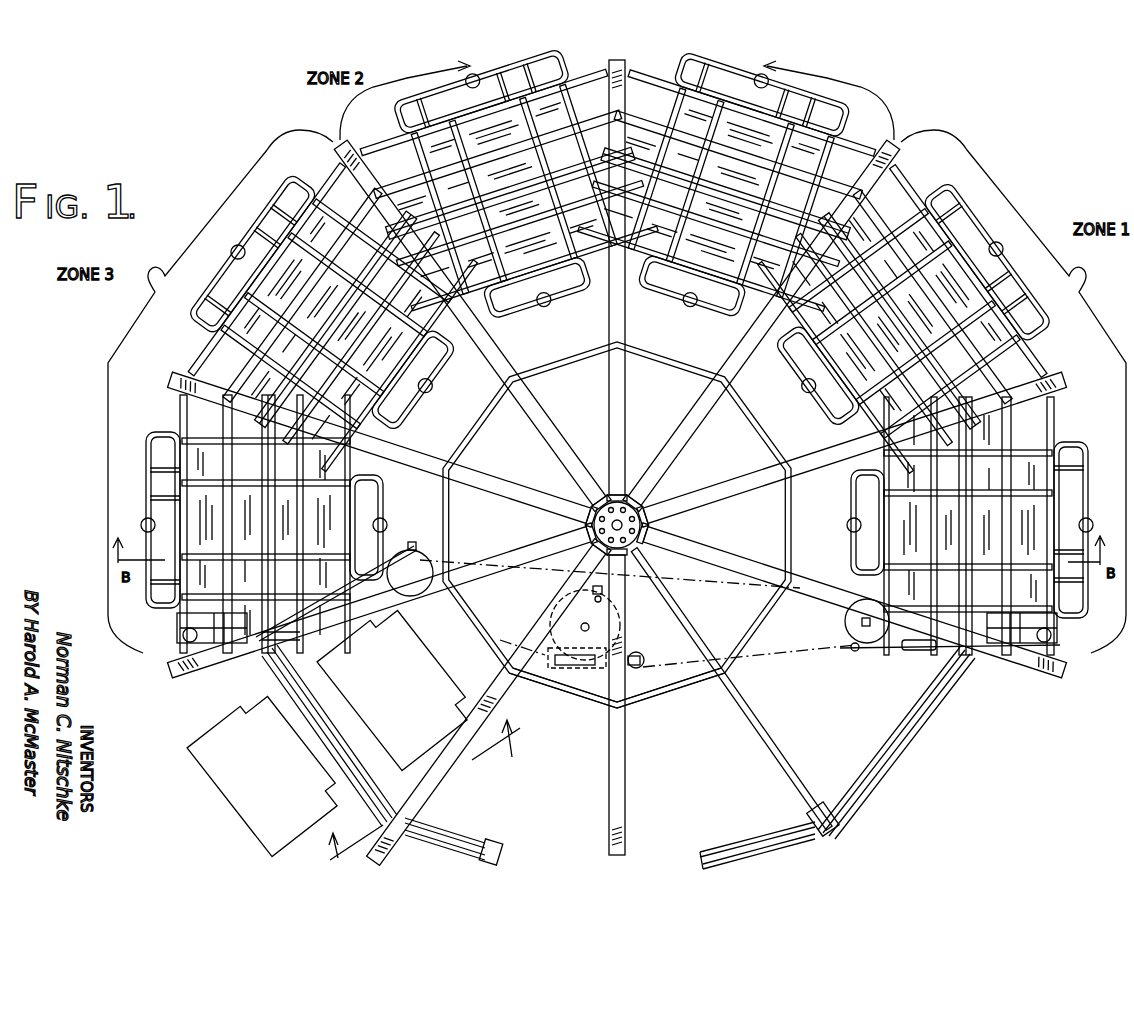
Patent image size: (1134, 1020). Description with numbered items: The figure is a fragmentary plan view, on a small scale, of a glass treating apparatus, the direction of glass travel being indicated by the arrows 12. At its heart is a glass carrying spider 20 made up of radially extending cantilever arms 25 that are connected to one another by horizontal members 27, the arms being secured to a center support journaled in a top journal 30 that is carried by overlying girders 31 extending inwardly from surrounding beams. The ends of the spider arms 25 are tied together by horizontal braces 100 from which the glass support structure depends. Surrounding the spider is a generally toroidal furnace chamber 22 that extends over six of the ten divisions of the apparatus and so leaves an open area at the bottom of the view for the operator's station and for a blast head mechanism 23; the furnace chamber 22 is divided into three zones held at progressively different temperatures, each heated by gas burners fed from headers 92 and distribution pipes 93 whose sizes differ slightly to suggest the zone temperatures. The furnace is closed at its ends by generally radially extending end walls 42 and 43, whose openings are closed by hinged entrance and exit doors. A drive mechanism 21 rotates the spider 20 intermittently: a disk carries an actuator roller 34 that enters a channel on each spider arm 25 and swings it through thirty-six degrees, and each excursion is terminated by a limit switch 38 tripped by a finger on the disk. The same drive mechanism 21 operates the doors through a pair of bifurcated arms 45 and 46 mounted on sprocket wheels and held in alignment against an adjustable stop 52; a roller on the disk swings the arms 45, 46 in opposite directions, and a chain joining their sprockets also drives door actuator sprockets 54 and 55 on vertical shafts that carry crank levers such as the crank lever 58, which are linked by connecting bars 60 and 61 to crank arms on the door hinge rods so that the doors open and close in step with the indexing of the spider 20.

The glass sheet 12 is at (416, 784).
The glass carrying spider 20 is at (690, 404).
The drive mechanism 21 is at (644, 640).
The furnace chamber 22 is at (164, 400).
The blast head mechanism 23 is at (222, 708).
The cantilever arms 25 is at (768, 740).
The horizontal members 27 is at (676, 696).
The top journal 30 is at (657, 508).
The girders 31 is at (738, 495).
The actuator roller 34 is at (590, 600).
The limit switch 38 is at (606, 590).
The entrance end wall 42 is at (1050, 630).
The exit end wall 43 is at (188, 634).
The bifurcated arm 45 is at (603, 700).
The bifurcated arm 46 is at (560, 660).
The adjustable stop 52 is at (582, 662).
The door actuator sprocket 54 is at (411, 543).
The door actuator sprocket 55 is at (424, 556).
The crank lever 58 is at (850, 645).
The connecting bar 60 is at (872, 650).
The connecting bar 61 is at (340, 600).
The headers 92 is at (233, 252).
The distribution pipes 93 is at (312, 192).
The horizontal braces 100 is at (958, 680).